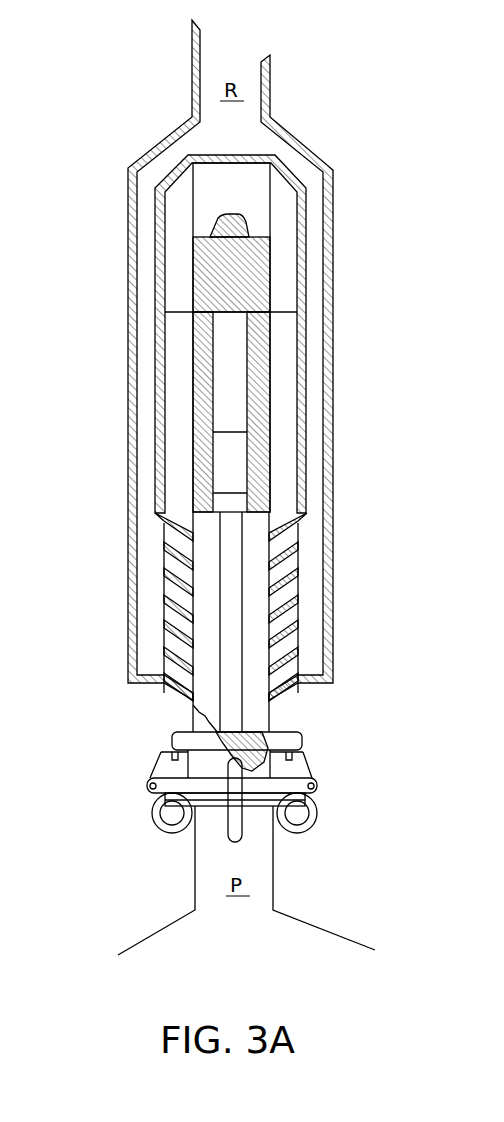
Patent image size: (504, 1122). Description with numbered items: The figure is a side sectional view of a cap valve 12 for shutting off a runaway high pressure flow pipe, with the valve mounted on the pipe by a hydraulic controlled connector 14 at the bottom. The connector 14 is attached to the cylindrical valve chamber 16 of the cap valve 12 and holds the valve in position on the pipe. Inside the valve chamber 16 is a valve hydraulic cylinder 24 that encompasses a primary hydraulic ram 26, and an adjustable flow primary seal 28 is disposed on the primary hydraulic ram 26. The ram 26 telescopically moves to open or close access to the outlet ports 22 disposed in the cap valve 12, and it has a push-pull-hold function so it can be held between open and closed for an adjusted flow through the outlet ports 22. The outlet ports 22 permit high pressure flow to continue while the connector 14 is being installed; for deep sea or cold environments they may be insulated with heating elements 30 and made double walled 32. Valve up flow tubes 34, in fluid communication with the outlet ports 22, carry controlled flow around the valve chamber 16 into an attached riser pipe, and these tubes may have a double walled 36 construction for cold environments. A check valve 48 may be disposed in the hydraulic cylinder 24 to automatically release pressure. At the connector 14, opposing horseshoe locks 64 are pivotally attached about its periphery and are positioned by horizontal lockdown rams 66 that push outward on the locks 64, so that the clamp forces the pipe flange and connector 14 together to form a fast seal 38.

The cap valve 12 is at (84, 129).
The hydraulic controlled connector 14 is at (130, 776).
The cylindrical valve chamber 16 is at (270, 459).
The outlet ports 22 is at (160, 520).
The valve hydraulic cylinder 24 is at (230, 570).
The primary hydraulic ram 26 is at (233, 702).
The adjustable flow primary seal 28 is at (273, 722).
The heating elements 30 is at (290, 630).
The double walled 32 is at (172, 590).
The valve up flow tubes 34 is at (322, 195).
The double walled valve 36 is at (335, 270).
The flange seal 38 is at (258, 812).
The check valve 48 is at (216, 214).
The horseshoe locks 64 is at (317, 823).
The horizontal lockdown rams 66 is at (177, 755).